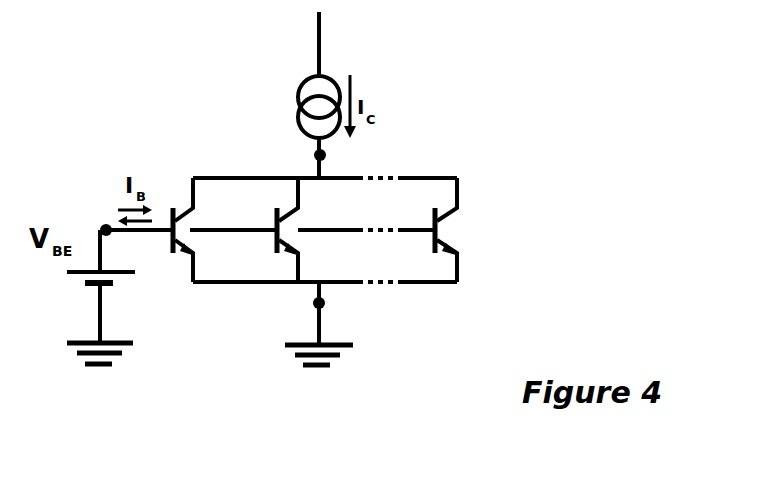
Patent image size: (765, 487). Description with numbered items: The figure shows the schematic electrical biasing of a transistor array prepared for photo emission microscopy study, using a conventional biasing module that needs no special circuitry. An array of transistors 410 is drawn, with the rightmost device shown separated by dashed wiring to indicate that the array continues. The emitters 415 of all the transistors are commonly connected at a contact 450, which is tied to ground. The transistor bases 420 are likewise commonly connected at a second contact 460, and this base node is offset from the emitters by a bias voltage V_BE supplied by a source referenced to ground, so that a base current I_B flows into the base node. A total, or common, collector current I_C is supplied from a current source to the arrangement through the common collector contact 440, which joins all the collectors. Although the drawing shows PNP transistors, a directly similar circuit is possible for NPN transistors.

The transistors 410 is at (462, 236).
The emitters 415 is at (458, 281).
The transistor bases 420 is at (275, 226).
The common collector contact 440 is at (326, 152).
The contact 450 is at (325, 303).
The contact 460 is at (103, 223).